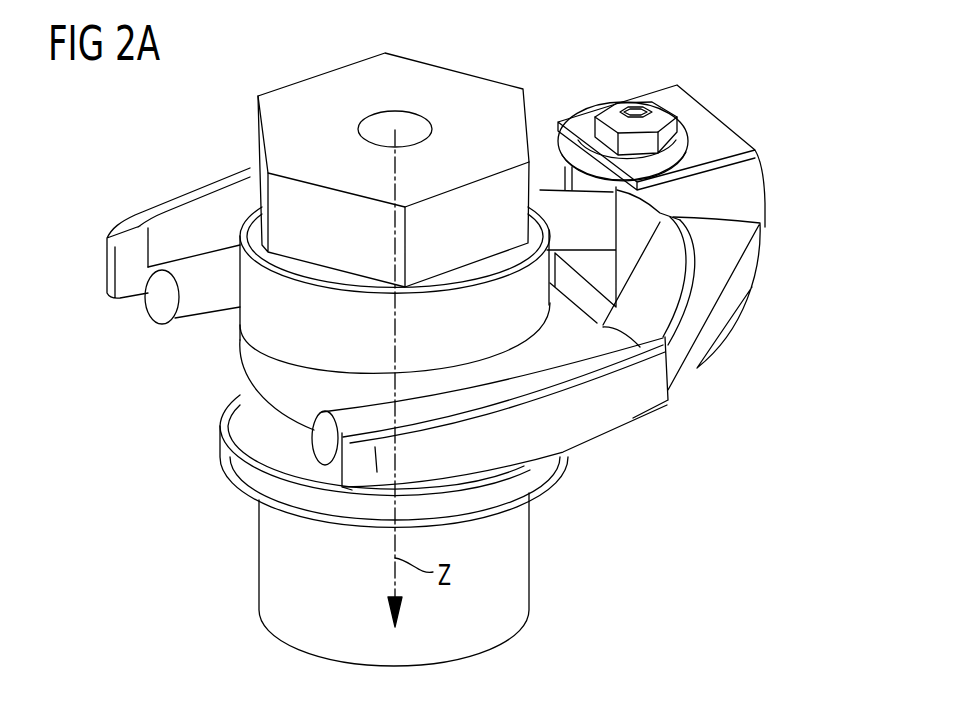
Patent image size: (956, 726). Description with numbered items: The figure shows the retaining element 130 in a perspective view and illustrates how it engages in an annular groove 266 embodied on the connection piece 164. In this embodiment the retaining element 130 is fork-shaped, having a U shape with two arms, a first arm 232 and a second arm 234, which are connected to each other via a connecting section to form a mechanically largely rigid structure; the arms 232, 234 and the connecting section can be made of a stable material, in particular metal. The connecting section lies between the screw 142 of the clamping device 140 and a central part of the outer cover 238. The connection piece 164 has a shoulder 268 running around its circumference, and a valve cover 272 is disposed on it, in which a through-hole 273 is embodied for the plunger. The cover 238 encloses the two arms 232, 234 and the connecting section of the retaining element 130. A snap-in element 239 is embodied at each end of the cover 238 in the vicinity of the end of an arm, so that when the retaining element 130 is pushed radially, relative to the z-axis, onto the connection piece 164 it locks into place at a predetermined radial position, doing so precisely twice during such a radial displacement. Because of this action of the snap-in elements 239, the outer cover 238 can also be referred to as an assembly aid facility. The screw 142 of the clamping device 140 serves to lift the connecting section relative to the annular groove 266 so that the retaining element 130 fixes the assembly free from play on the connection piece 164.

The retaining element 130 is at (770, 155).
The clamping device 140 is at (633, 100).
The screw 142 is at (623, 104).
The connection piece 164 is at (517, 565).
The first arm 232 is at (160, 303).
The second arm 234 is at (313, 432).
The outer cover 238 is at (180, 190).
The snap-in element 239 is at (130, 255).
The annular groove 266 is at (255, 354).
The shoulder 268 is at (223, 448).
The valve cover 272 is at (460, 85).
The through-hole 273 is at (375, 128).